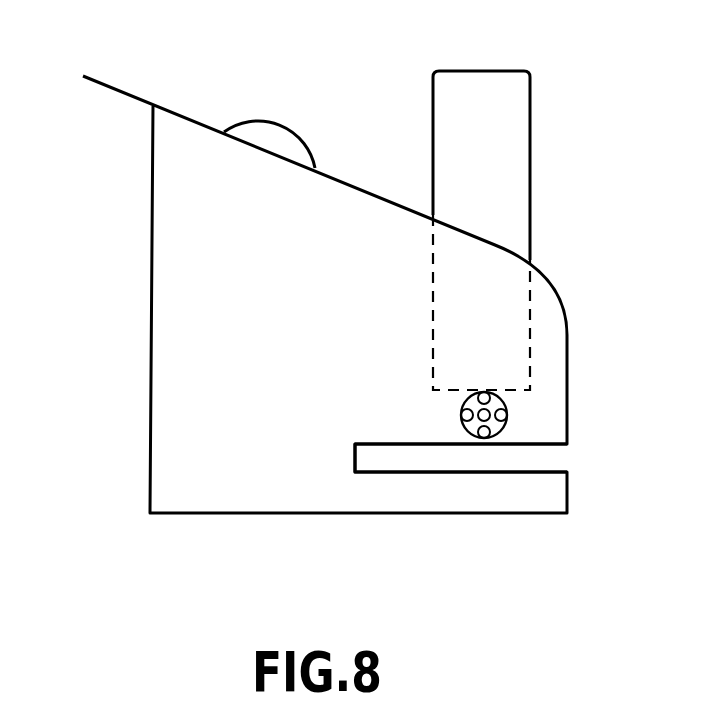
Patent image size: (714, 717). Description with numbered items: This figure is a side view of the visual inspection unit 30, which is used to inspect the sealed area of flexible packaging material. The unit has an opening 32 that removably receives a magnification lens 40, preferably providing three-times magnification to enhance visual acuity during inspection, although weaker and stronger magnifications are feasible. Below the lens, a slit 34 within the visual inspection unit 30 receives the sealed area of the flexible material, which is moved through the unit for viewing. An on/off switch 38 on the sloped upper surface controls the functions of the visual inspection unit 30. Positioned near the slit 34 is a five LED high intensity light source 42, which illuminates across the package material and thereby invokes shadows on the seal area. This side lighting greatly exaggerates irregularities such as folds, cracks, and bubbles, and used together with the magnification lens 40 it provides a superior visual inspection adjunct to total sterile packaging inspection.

The visual inspection unit 30 is at (170, 62).
The opening 32 is at (551, 342).
The slit 34 is at (533, 464).
The on/off switch 38 is at (267, 128).
The magnification lens 40 is at (508, 177).
The five LED high intensity light source 42 is at (505, 428).